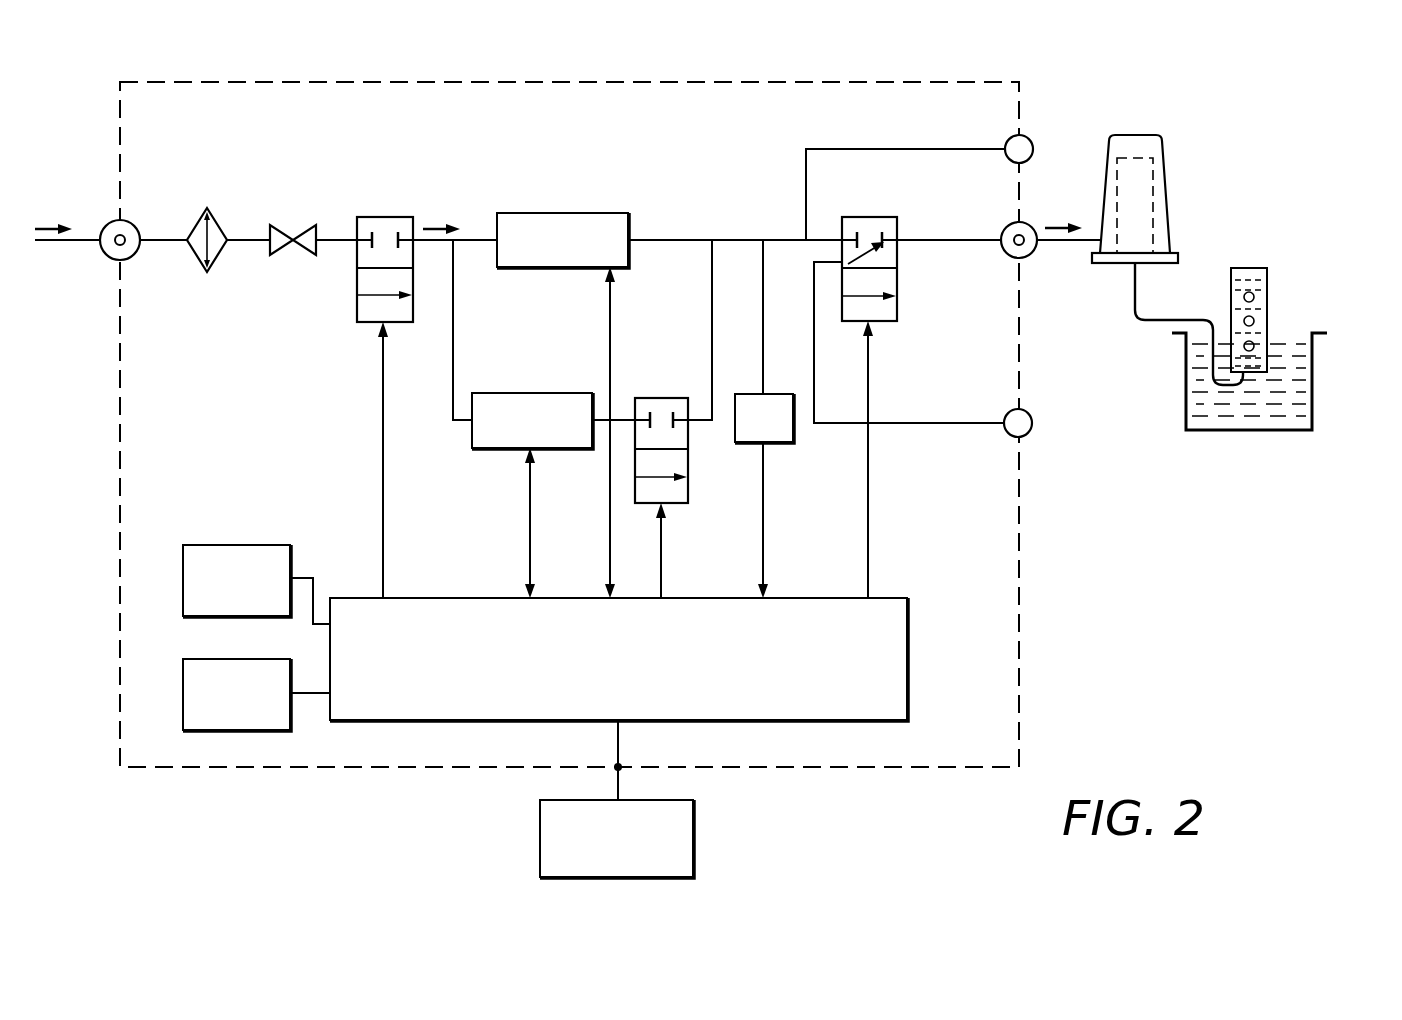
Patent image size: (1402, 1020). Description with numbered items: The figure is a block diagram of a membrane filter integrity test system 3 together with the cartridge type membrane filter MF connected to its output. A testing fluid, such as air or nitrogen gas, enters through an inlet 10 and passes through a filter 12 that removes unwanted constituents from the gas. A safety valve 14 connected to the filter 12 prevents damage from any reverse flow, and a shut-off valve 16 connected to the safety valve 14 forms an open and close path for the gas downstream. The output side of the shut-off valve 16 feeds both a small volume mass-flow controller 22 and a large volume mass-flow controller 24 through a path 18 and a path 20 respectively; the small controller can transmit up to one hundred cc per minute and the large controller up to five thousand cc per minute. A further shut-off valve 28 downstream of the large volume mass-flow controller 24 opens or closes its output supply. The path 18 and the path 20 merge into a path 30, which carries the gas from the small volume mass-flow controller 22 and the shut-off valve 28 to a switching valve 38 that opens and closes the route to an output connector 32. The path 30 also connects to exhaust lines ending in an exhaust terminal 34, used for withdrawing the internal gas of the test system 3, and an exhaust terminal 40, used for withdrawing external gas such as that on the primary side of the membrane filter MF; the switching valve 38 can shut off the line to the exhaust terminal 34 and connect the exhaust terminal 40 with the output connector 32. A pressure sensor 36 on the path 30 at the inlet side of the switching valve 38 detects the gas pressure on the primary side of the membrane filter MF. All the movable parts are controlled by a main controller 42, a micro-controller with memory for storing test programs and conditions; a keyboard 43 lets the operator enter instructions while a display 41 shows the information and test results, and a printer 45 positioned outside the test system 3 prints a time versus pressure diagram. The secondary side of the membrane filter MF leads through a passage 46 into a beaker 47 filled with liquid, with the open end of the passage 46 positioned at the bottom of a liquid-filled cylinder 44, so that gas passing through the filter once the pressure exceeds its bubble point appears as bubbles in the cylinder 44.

The membrane filter integrity test system 3 is at (658, 69).
The inlet 10 is at (132, 226).
The filter 12 is at (208, 217).
The safety valve 14 is at (287, 262).
The shut-off valve 16 is at (398, 217).
The path 18 is at (473, 238).
The path 20 is at (453, 345).
The small volume mass-flow controller 22 is at (546, 255).
The large volume mass-flow controller 24 is at (516, 435).
The shut-off valve 28 is at (672, 397).
The path 30 is at (736, 238).
The output connector 32 is at (1034, 227).
The exhaust terminal 34 is at (1032, 139).
The pressure sensor 36 is at (749, 433).
The switching valve 38 is at (875, 217).
The exhaust terminal 40 is at (1032, 415).
The display 41 is at (221, 595).
The main controller 42 is at (604, 670).
The keyboard 43 is at (221, 708).
The cylinder 44 is at (1267, 290).
The printer 45 is at (601, 853).
The passage 46 is at (1170, 327).
The beaker 47 is at (1315, 394).
The membrane filter MF is at (1170, 152).